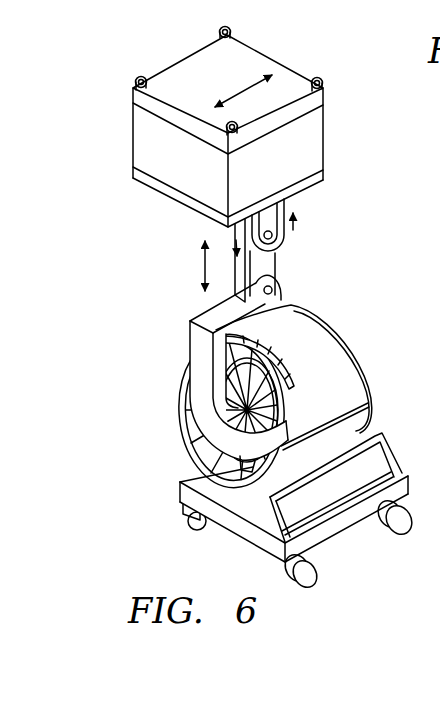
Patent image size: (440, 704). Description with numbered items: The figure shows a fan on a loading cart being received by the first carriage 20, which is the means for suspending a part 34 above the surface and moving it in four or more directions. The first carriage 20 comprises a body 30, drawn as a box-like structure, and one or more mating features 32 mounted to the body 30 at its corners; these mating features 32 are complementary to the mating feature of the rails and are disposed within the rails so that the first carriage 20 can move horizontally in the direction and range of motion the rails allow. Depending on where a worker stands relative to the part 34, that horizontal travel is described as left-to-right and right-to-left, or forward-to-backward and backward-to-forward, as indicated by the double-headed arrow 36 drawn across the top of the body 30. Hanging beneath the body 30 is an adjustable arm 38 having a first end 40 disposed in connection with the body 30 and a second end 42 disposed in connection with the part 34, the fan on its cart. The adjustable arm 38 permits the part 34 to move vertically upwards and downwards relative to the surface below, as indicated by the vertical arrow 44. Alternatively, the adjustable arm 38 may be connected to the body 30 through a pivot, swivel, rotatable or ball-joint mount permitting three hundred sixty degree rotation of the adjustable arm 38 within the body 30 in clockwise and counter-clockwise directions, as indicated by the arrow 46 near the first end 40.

The first carriage 20 is at (126, 46).
The body 30 is at (182, 177).
The mating features 32 is at (133, 80).
The part 34 is at (353, 390).
The arrow 36 is at (238, 93).
The adjustable arm 38 is at (272, 266).
The first end 40 is at (266, 230).
The second end 42 is at (273, 289).
The arrow 44 is at (205, 267).
The arrow 46 is at (291, 233).